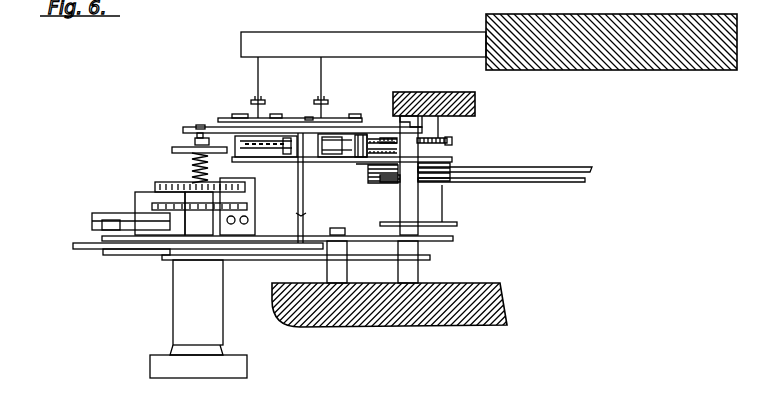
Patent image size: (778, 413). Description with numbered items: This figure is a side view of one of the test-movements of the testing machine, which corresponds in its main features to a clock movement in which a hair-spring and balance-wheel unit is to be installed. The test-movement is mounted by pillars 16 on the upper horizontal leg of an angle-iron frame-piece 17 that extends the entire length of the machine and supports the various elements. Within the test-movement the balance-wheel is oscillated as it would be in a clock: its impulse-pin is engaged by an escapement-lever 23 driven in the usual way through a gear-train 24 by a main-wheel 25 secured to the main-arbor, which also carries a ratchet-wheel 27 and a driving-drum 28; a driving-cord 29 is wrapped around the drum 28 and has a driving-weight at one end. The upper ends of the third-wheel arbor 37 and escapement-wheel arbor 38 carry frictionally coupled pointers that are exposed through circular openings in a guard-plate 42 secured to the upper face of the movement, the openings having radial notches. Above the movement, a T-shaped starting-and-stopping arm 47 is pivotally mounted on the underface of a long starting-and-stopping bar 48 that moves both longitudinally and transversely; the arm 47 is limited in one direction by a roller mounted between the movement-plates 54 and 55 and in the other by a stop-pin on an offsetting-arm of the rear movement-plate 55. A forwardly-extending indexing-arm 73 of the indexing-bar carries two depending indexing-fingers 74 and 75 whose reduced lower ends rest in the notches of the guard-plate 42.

The pillar 16 is at (414, 279).
The angle-iron frame-piece 17 is at (438, 318).
The escapement-lever 23 is at (222, 145).
The gear-train 24 is at (367, 134).
The main-wheel 25 is at (450, 141).
The ratchet-wheel 27 is at (456, 166).
The driving-drum 28 is at (441, 210).
The driving-cord 29 is at (549, 183).
The third-wheel arbor 37 is at (325, 158).
The escapement-wheel arbor 38 is at (262, 152).
The guard-plate 42 is at (228, 118).
The starting-and-stopping arm 47 is at (340, 160).
The starting-and-stopping bar 48 is at (476, 104).
The movement-plate 54 is at (343, 127).
The rear movement-plate 55 is at (294, 160).
The indexing-arm 73 is at (398, 41).
The indexing-finger 74 is at (256, 72).
The indexing-finger 75 is at (323, 76).